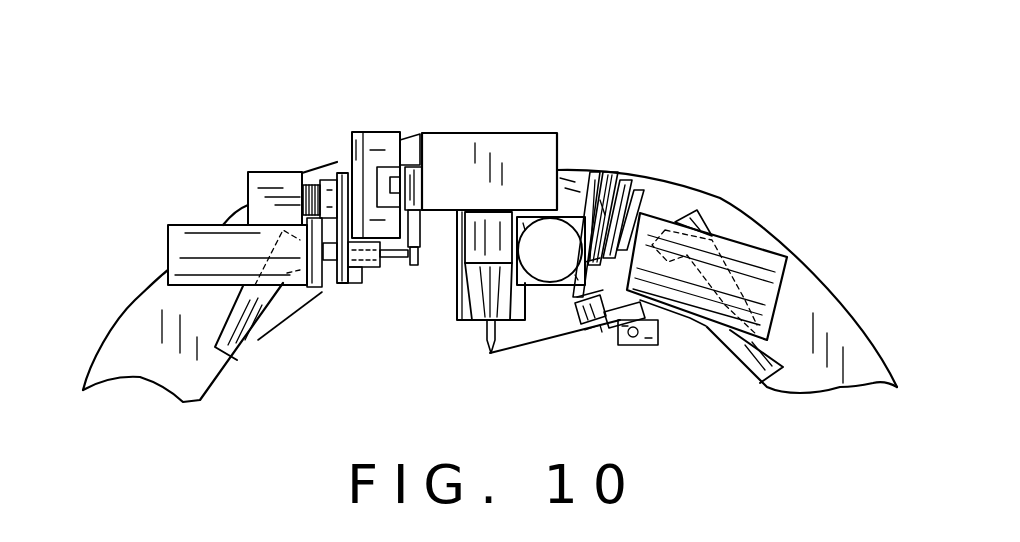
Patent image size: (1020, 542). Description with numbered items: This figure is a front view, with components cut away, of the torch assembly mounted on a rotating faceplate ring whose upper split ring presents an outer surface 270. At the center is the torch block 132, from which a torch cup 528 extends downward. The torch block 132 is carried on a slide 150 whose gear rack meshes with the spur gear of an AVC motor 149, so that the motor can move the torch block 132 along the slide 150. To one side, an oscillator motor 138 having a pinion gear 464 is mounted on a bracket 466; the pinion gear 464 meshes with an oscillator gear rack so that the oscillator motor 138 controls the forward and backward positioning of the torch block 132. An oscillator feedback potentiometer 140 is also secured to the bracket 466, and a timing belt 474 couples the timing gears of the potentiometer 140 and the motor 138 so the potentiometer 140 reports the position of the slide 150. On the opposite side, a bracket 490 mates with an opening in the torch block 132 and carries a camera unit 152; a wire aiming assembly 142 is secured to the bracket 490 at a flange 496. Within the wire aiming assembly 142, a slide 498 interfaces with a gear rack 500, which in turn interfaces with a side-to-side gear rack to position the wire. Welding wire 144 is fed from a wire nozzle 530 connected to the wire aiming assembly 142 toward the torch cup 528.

The torch block 132 is at (498, 150).
The oscillator motor 138 is at (185, 223).
The oscillator feedback potentiometer 140 is at (263, 172).
The wire aiming assembly 142 is at (690, 323).
The welding wire 144 is at (527, 343).
The AVC motor 149 is at (548, 258).
The slide 150 is at (453, 280).
The camera unit 152 is at (748, 297).
The outer surface 270 is at (717, 213).
The pinion gear 464 is at (397, 280).
The bracket 466 is at (367, 137).
The timing belt 474 is at (338, 148).
The bracket 490 is at (572, 197).
The flange 496 is at (605, 197).
The slide 498 is at (640, 197).
The gear rack 500 is at (650, 197).
The torch cup 528 is at (465, 305).
The wire nozzle 530 is at (602, 333).